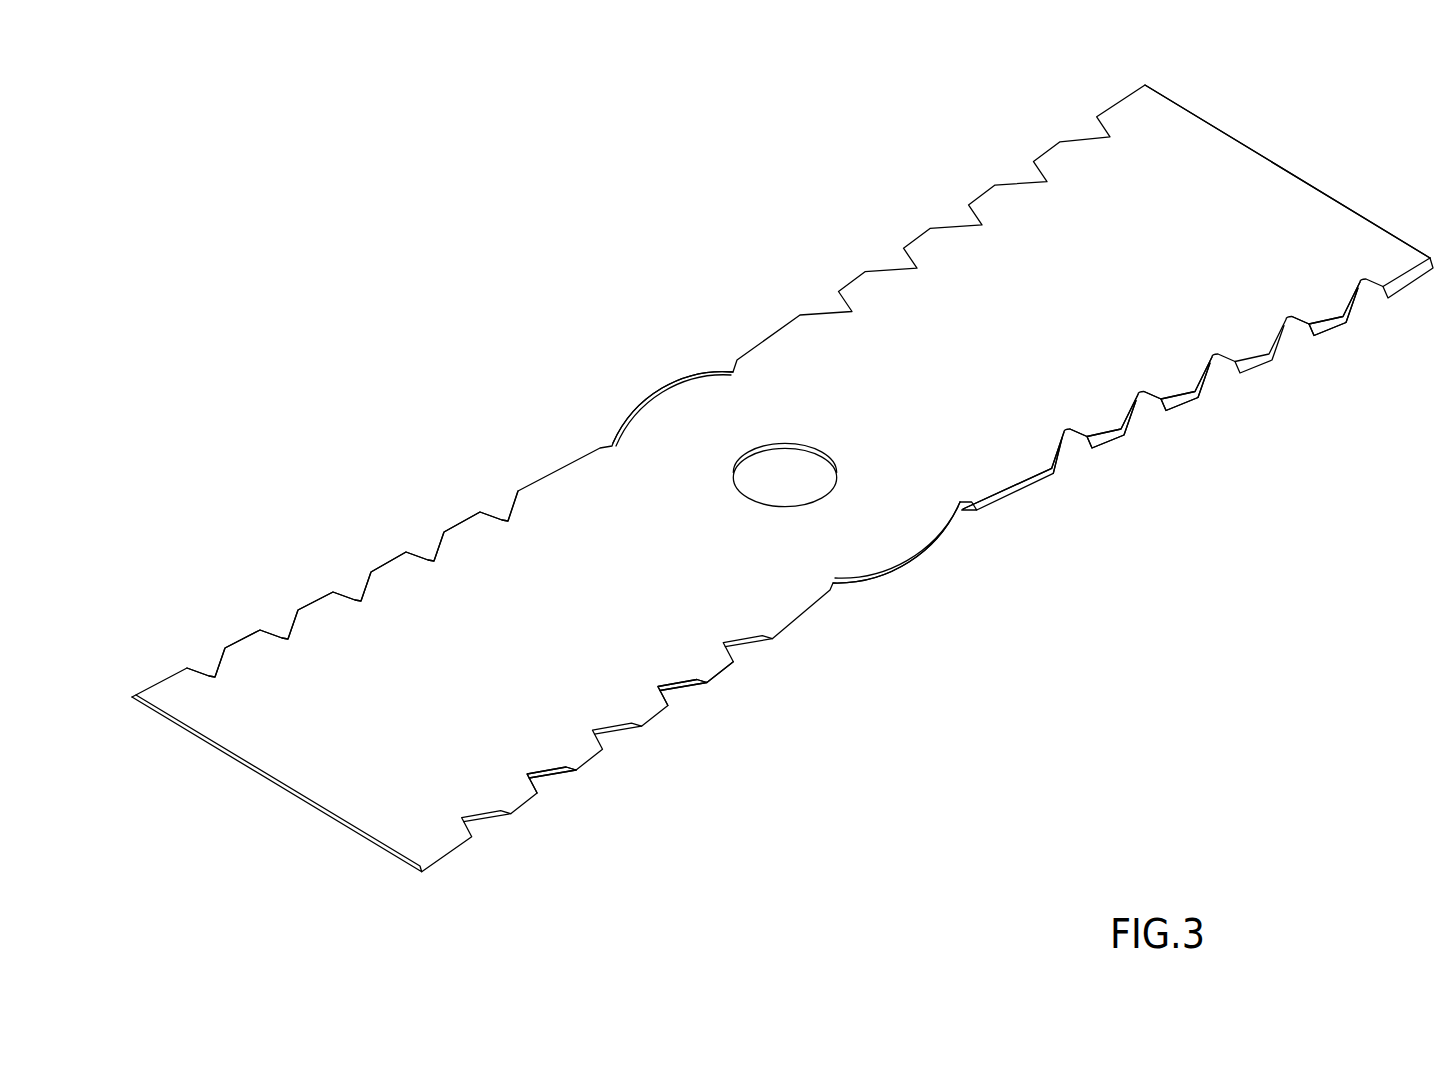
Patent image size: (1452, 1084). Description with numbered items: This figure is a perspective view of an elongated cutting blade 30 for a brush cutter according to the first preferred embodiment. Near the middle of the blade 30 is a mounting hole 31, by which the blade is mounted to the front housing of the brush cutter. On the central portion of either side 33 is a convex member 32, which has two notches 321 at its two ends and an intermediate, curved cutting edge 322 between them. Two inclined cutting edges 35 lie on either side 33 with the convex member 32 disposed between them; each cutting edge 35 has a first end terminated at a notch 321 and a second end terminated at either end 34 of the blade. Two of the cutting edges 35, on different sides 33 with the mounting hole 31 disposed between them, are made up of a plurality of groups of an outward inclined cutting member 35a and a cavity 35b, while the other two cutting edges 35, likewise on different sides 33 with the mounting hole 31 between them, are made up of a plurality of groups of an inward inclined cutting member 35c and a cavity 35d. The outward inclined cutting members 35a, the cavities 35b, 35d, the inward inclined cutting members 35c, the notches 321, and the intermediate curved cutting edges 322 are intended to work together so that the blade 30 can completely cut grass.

The cutting blade 30 is at (340, 733).
The mounting hole 31 is at (813, 463).
The convex member 32 is at (652, 385).
The side 33 is at (387, 560).
The end 34 is at (1257, 152).
The inclined cutting edge 35 is at (1185, 397).
The outward inclined cutting member 35a is at (1327, 320).
The cavity 35b is at (1063, 448).
The inward inclined cutting member 35c is at (717, 673).
The cavity 35d is at (540, 780).
The notch 321 is at (963, 513).
The intermediate, curved cutting edge 322 is at (952, 535).